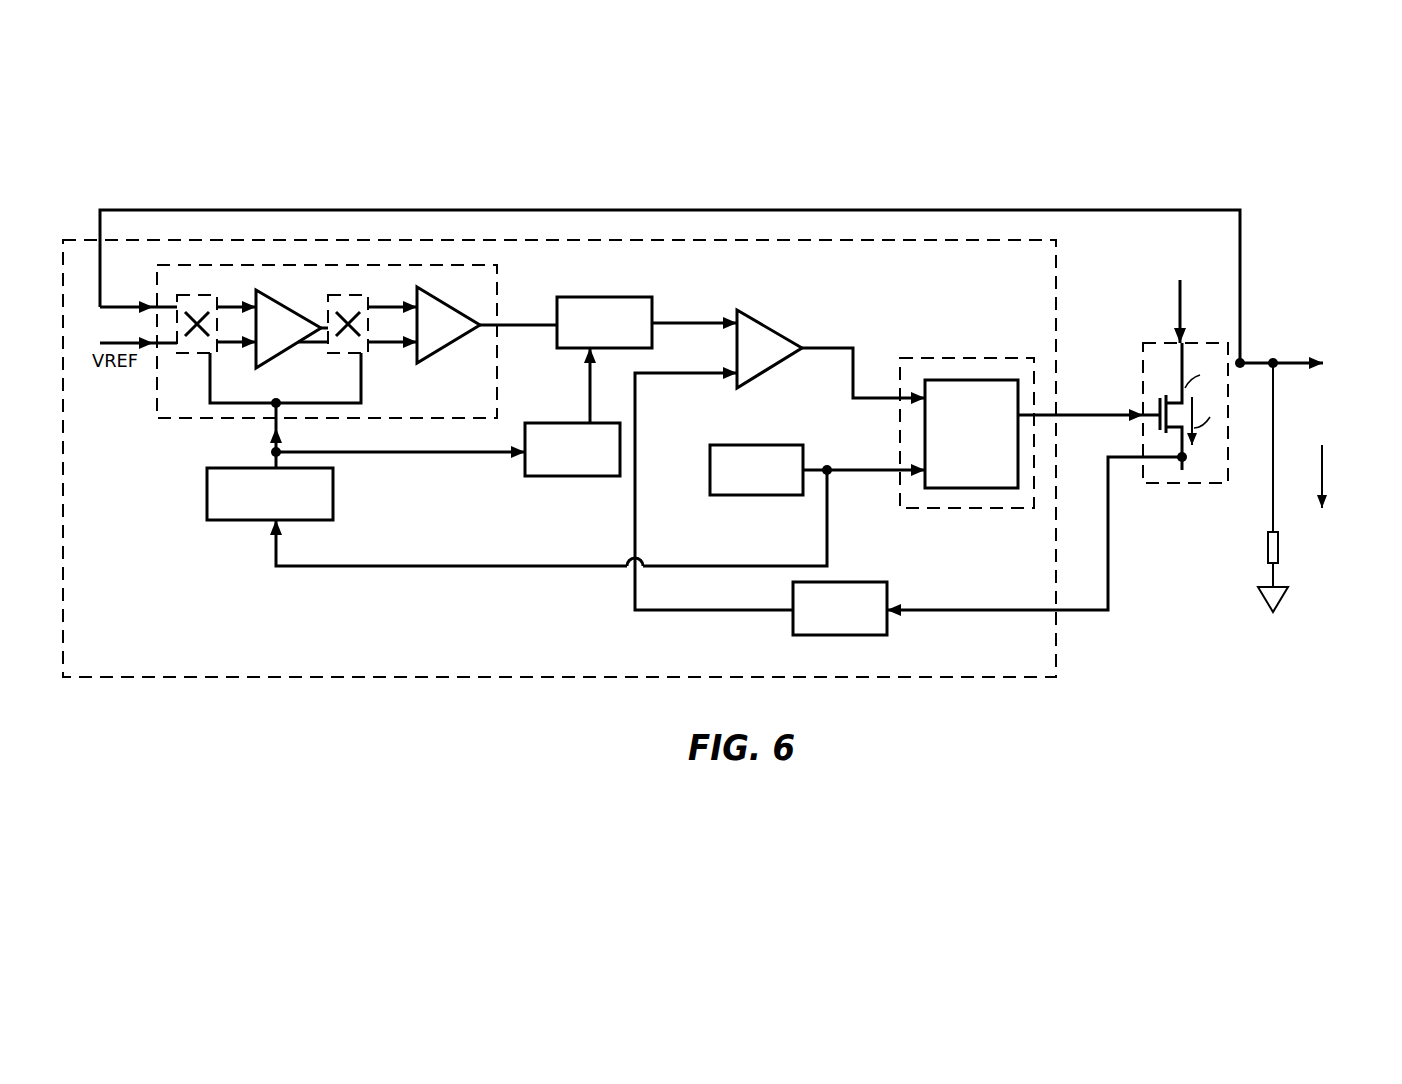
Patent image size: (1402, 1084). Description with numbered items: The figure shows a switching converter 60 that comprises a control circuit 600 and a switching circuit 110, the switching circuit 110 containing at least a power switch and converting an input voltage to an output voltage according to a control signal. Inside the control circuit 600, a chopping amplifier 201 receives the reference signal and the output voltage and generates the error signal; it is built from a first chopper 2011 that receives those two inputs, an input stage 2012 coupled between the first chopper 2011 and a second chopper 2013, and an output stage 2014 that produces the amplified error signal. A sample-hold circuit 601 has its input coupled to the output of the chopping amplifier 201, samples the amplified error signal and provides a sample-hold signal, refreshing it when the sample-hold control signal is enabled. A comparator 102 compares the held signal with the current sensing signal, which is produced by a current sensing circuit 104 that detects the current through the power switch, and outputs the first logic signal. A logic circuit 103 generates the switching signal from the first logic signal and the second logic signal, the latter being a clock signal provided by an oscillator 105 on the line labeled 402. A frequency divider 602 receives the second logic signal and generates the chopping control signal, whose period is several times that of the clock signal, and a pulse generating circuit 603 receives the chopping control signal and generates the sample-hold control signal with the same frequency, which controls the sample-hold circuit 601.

The switching converter 60 is at (1337, 283).
The control circuit 600 is at (1058, 287).
The chopping amplifier 201 is at (499, 290).
The first chopper 2011 is at (184, 355).
The input stage 2012 is at (268, 365).
The second chopper 2013 is at (342, 355).
The output stage 2014 is at (432, 362).
The sample-hold circuit 601 is at (611, 297).
The frequency divider 602 is at (333, 487).
The pulse generating circuit 603 is at (555, 476).
The comparator 102 is at (777, 333).
The logic circuit 103 is at (931, 509).
The current sensing circuit 104 is at (830, 635).
The oscillator 105 is at (770, 495).
The oscillator output signal line VL2 402 is at (808, 455).
The switching circuit 110 is at (1230, 430).